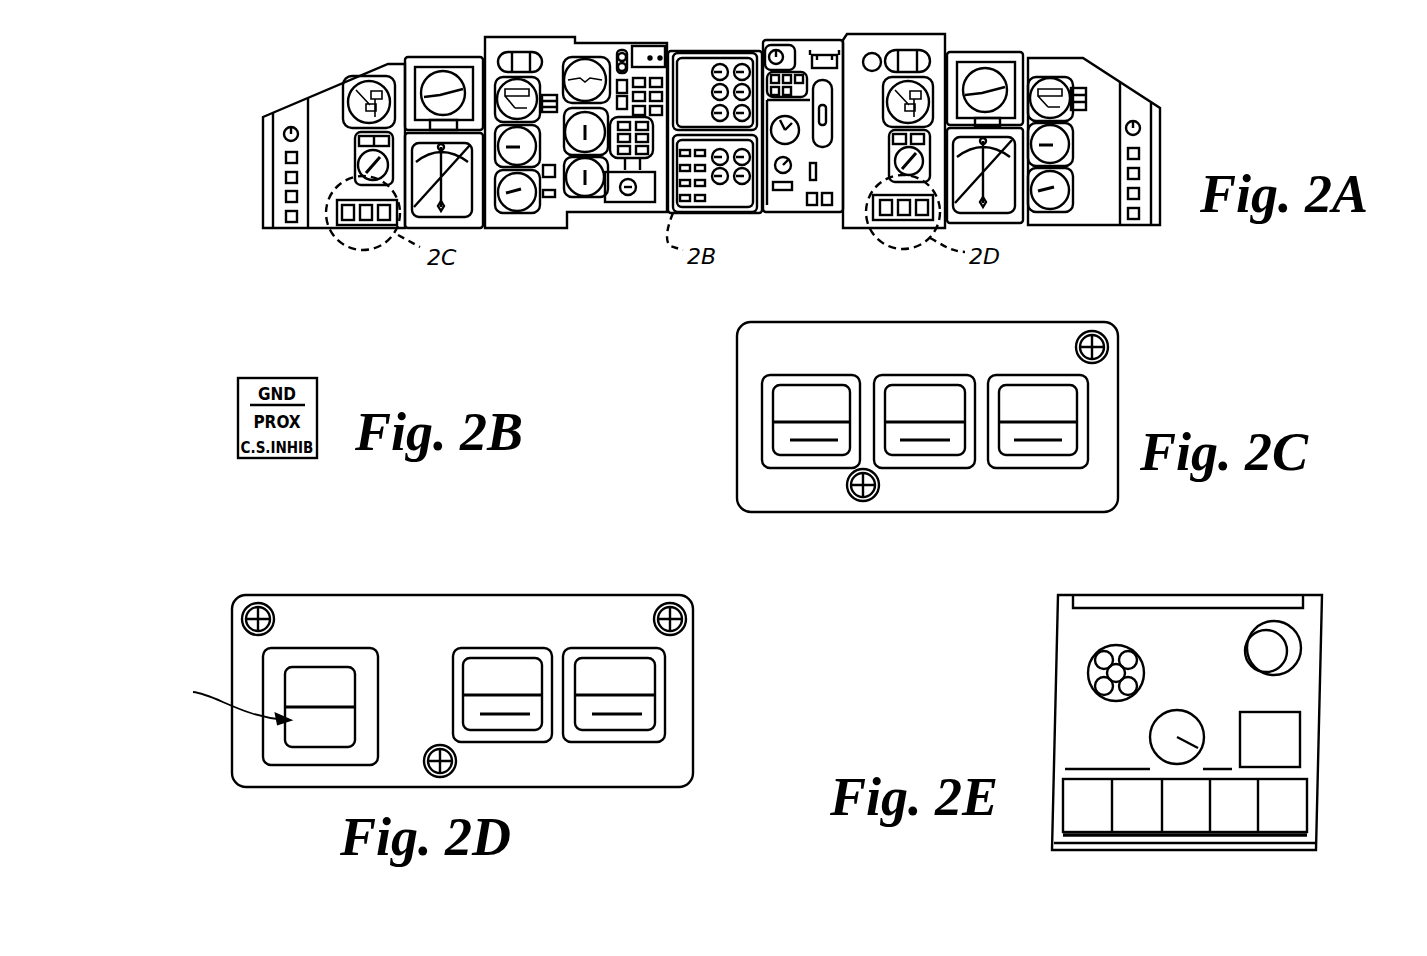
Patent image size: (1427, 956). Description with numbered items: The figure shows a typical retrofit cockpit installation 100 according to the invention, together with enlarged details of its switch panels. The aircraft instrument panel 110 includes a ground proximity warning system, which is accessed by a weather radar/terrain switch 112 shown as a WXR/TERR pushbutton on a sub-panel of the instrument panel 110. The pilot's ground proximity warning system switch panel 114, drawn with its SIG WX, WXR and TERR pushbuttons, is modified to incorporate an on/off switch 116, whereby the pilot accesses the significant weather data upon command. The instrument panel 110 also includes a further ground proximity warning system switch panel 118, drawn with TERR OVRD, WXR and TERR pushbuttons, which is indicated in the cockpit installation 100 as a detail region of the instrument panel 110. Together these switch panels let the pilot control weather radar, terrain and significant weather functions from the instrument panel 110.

In FIG. 2A, the cockpit installation 100 is at (296, 84).
In FIG. 2A, the aircraft instrument panel 110 is at (1105, 76).
In FIG. 2E, the weather radar/terrain switch 112 is at (1300, 738).
In FIG. 2C, the ground proximity warning system switch panel 114 is at (910, 512).
In FIG. 2C, the on/off switch 116 is at (797, 457).
In FIG. 2D, the ground proximity warning system switch panel 118 is at (577, 787).